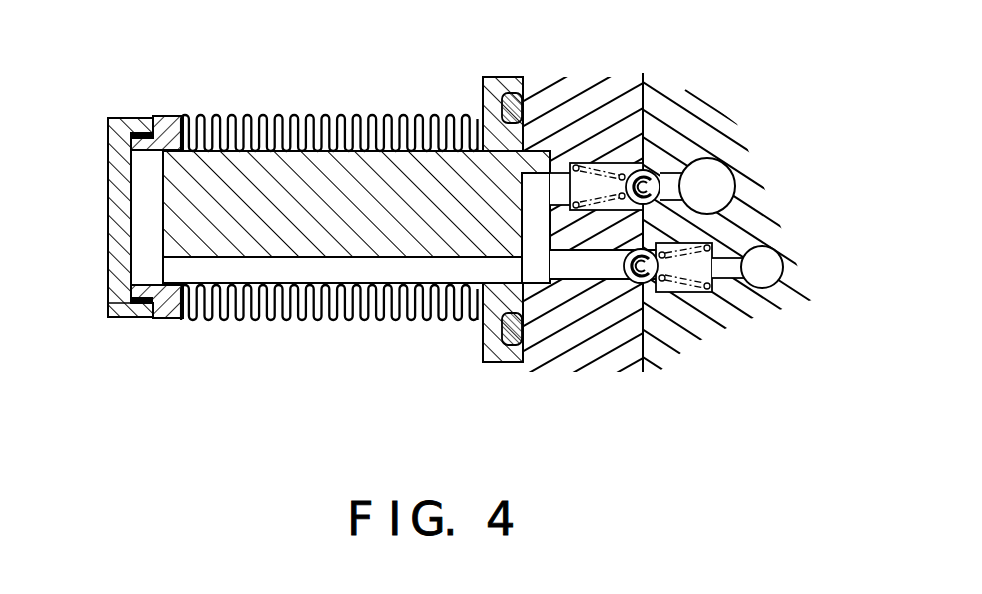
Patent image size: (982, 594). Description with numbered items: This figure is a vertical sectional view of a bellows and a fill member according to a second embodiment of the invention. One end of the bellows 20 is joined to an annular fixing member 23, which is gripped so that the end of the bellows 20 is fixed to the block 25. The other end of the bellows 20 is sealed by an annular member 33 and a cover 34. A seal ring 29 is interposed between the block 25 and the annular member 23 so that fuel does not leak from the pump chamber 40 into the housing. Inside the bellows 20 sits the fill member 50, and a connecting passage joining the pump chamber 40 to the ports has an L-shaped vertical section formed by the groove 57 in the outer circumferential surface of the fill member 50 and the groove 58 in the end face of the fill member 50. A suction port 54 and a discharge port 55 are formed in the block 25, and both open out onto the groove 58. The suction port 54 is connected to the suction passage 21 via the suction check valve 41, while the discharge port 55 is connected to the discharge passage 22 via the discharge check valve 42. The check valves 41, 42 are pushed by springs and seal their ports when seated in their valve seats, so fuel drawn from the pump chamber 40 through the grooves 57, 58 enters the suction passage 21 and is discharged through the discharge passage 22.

The bellows 20 is at (220, 117).
The suction passage 21 is at (712, 178).
The discharge passage 22 is at (773, 267).
The annular fixing member 23 is at (491, 358).
The block 25 is at (613, 97).
The seal ring 29 is at (507, 347).
The annular member 33 is at (168, 317).
The cover 34 is at (103, 307).
The pump chamber 40 is at (140, 232).
The suction check valve 41 is at (651, 170).
The discharge check valve 42 is at (660, 293).
The fill member 50 is at (353, 170).
The suction port 54 is at (557, 183).
The discharge port 55 is at (597, 263).
The groove 57 is at (353, 270).
The groove 58 is at (530, 180).